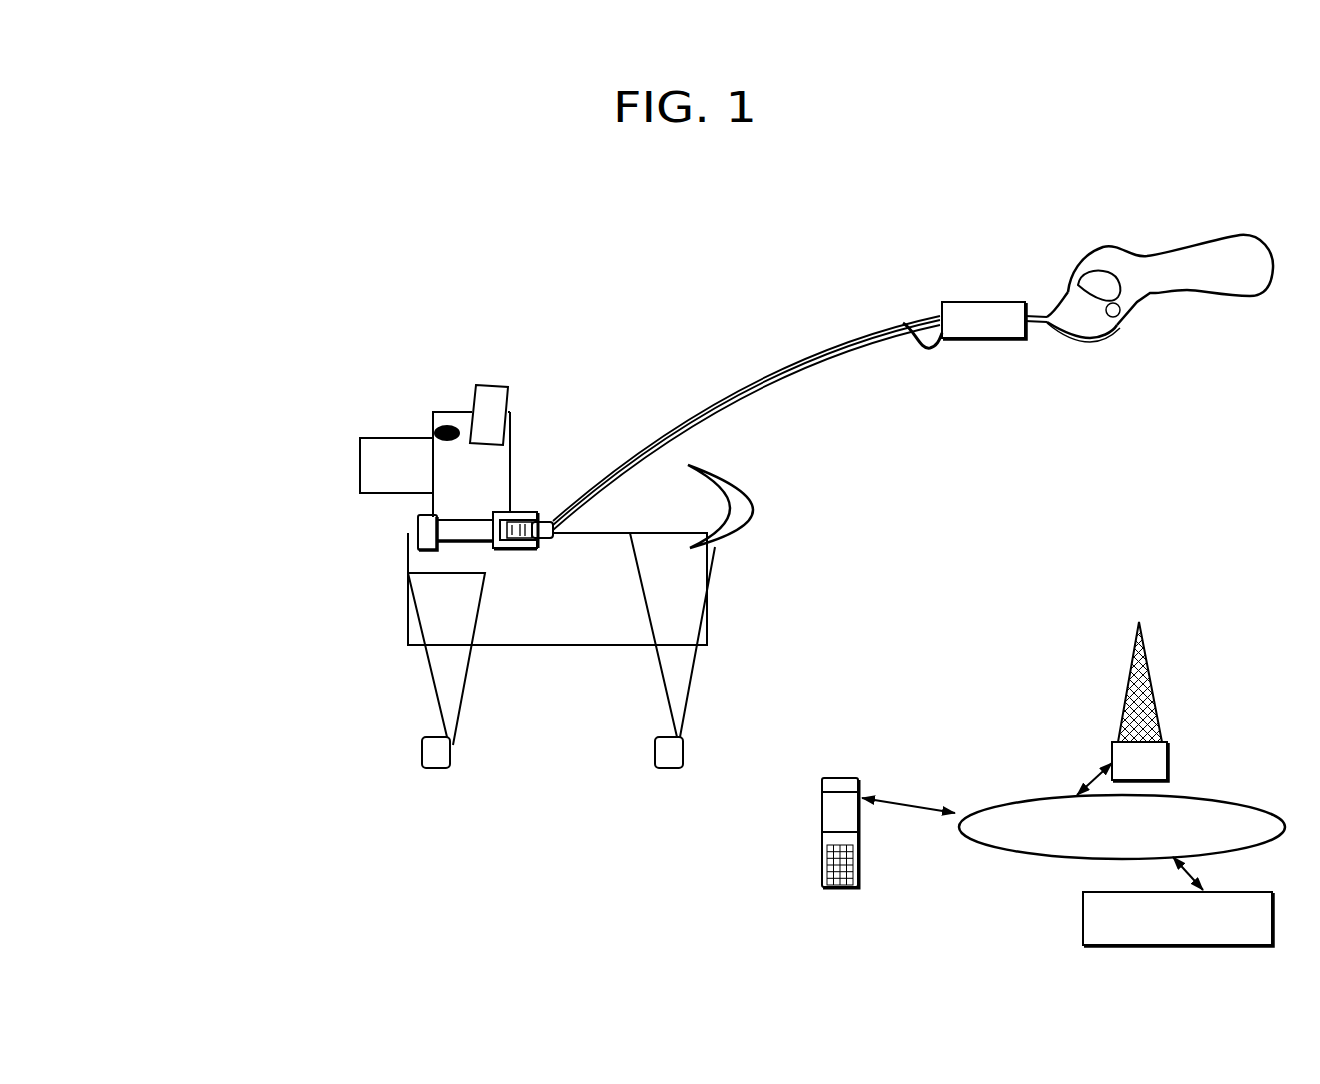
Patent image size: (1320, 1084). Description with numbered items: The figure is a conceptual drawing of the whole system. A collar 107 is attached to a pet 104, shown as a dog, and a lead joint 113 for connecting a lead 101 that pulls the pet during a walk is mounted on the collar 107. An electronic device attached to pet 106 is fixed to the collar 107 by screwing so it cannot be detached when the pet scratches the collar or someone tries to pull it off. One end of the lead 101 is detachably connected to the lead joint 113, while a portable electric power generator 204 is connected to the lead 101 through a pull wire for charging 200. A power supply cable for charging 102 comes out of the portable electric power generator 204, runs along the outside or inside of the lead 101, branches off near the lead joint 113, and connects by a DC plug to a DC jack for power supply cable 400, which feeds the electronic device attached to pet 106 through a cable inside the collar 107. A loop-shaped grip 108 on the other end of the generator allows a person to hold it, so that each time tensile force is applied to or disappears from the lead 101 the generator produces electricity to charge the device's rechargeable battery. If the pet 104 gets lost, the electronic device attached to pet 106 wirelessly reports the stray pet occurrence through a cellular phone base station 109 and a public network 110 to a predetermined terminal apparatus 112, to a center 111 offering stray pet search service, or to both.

The lead 101 is at (920, 318).
The power supply cable for charging 102 is at (575, 495).
The pet 104 is at (723, 587).
The electronic device attached to pet 106 is at (418, 537).
The collar 107 is at (467, 527).
The grip 108 is at (1095, 338).
The cellular phone base station 109 is at (1112, 750).
The public network 110 is at (1073, 826).
The center 111 is at (1178, 919).
The terminal apparatus 112 is at (822, 842).
The lead joint 113 is at (518, 548).
The pull wire for charging 200 is at (935, 317).
The portable electric power generator 204 is at (975, 330).
The DC jack for power supply cable 400 is at (517, 523).